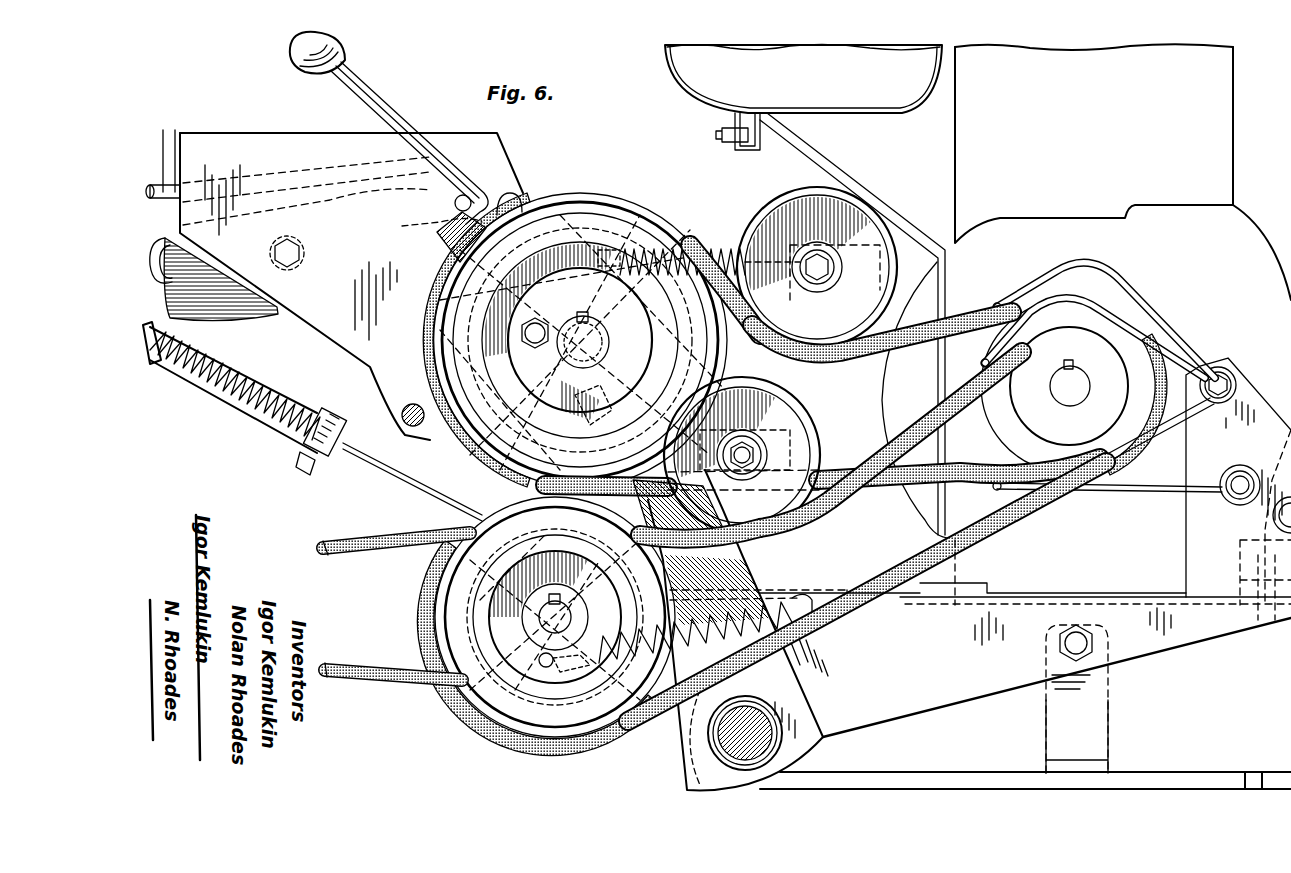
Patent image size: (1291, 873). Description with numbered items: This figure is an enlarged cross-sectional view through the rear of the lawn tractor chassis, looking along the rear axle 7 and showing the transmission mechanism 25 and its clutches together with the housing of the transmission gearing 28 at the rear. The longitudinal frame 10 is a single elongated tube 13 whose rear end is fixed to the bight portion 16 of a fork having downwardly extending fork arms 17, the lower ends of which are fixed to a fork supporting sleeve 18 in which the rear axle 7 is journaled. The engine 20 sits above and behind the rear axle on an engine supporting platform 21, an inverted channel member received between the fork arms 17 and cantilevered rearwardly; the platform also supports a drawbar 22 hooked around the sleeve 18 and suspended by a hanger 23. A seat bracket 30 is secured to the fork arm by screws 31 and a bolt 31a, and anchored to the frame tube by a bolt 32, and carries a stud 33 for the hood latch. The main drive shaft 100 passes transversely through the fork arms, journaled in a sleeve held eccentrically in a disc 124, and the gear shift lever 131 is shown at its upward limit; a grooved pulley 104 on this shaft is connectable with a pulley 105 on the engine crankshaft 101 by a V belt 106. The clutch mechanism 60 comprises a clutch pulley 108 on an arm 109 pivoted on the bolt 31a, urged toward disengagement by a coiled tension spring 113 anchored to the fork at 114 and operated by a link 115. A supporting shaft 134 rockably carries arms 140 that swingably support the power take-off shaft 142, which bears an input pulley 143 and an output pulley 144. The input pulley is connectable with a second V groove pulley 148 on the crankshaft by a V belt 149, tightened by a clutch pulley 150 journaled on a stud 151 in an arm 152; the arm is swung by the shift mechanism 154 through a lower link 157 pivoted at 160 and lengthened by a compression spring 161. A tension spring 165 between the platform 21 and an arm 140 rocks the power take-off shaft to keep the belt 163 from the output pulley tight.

The rear axle 7 is at (722, 742).
The longitudinal frame 10 is at (262, 318).
The elongated tube 13 is at (224, 305).
The bight portion 16 is at (432, 226).
The fork arms 17 is at (805, 712).
The fork supporting sleeve 18 is at (717, 746).
The engine 20 is at (1236, 138).
The engine supporting platform 21 is at (1168, 647).
The drawbar 22 is at (1168, 778).
The hanger 23 is at (1097, 727).
The transmission mechanism 25 is at (668, 200).
The frame 28 is at (1190, 542).
The seat brackets 30 is at (256, 135).
The screws 31 is at (508, 198).
The bolt 31a is at (580, 331).
The bolt 32 is at (298, 250).
The studs 33 is at (416, 405).
The clutch mechanism 60 is at (698, 200).
The main drive shaft 100 is at (596, 350).
The engine crankshaft 101 is at (1074, 396).
The grooved pulley 104 is at (606, 215).
The pulley 105 is at (1005, 437).
The V belt 106 is at (928, 362).
The clutch pulley 108 is at (815, 200).
The arm 109 is at (750, 343).
The coiled tension spring 113 is at (705, 252).
The spring anchor 114 is at (607, 250).
The link 115 is at (163, 135).
The disc 124 is at (515, 280).
The gear shift lever 131 is at (380, 108).
The supporting shaft 134 is at (745, 548).
The arms 140 is at (540, 485).
The power take-off shaft 142 is at (532, 617).
The input pulley 143 is at (452, 628).
The output pulley 144 is at (438, 600).
The second V groove pulley 148 is at (1052, 381).
The V belt 149 is at (843, 505).
The clutch pulley 150 is at (768, 455).
The stud 151 is at (752, 450).
The arm 152 is at (722, 496).
The shift mechanism 154 is at (312, 421).
The lower link 157 is at (352, 456).
The pivot connection 160 is at (572, 520).
The compression spring 161 is at (282, 390).
The belt 163 is at (353, 546).
The tension spring 165 is at (760, 578).